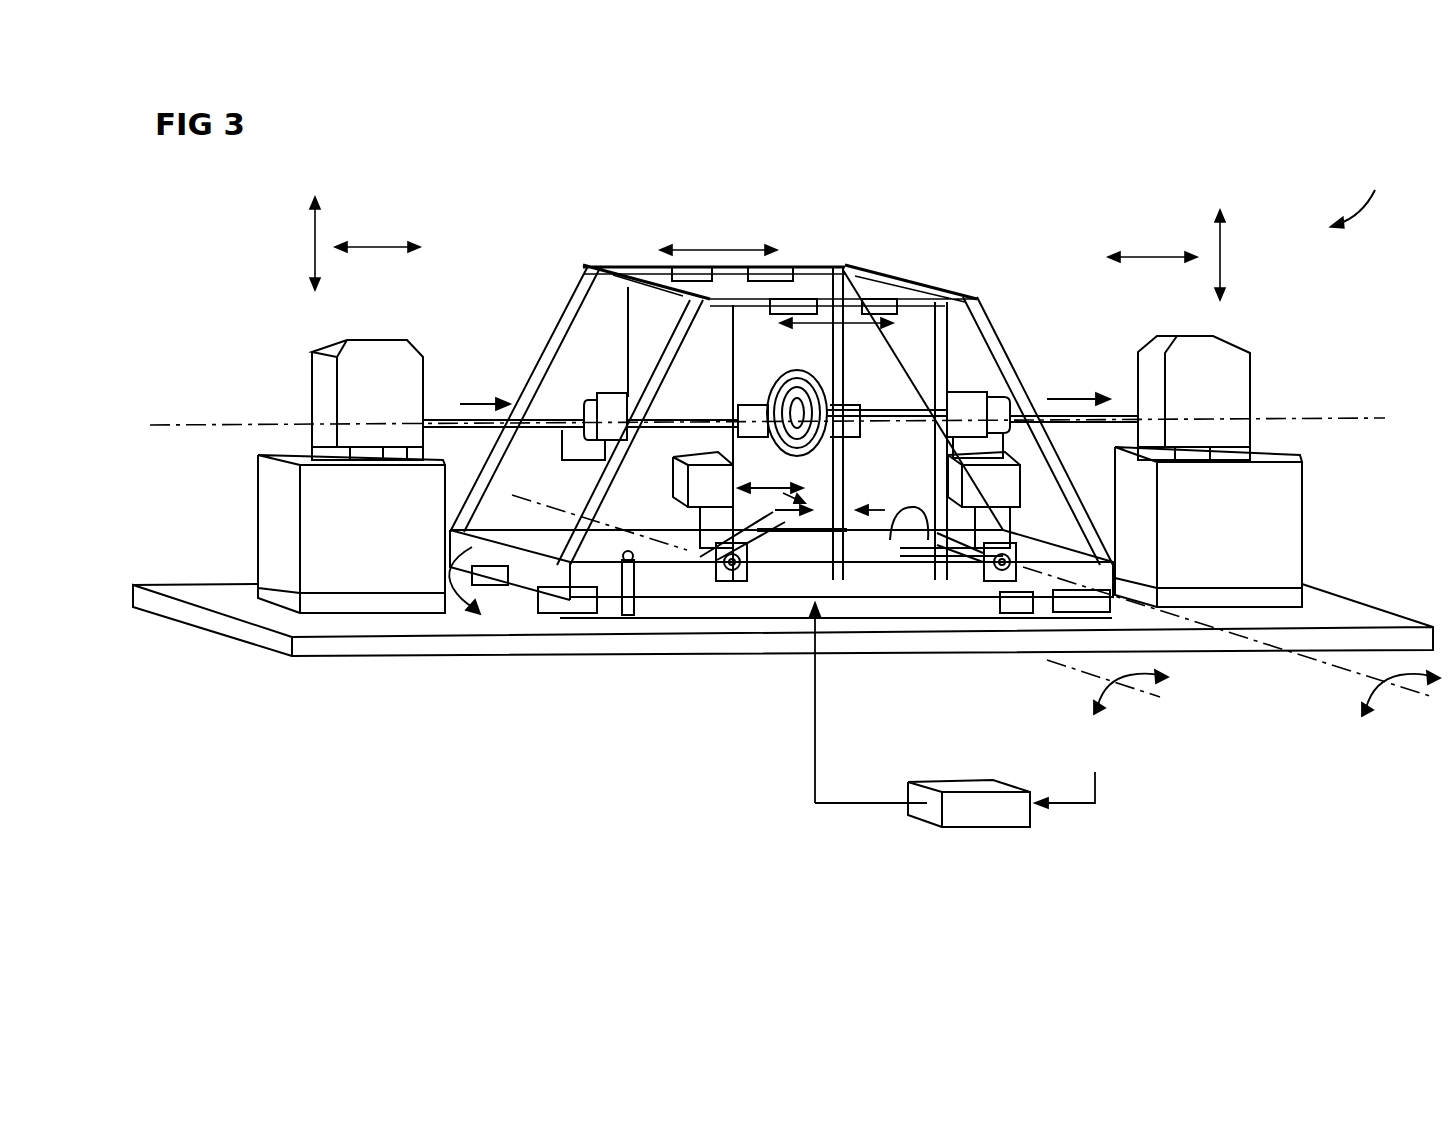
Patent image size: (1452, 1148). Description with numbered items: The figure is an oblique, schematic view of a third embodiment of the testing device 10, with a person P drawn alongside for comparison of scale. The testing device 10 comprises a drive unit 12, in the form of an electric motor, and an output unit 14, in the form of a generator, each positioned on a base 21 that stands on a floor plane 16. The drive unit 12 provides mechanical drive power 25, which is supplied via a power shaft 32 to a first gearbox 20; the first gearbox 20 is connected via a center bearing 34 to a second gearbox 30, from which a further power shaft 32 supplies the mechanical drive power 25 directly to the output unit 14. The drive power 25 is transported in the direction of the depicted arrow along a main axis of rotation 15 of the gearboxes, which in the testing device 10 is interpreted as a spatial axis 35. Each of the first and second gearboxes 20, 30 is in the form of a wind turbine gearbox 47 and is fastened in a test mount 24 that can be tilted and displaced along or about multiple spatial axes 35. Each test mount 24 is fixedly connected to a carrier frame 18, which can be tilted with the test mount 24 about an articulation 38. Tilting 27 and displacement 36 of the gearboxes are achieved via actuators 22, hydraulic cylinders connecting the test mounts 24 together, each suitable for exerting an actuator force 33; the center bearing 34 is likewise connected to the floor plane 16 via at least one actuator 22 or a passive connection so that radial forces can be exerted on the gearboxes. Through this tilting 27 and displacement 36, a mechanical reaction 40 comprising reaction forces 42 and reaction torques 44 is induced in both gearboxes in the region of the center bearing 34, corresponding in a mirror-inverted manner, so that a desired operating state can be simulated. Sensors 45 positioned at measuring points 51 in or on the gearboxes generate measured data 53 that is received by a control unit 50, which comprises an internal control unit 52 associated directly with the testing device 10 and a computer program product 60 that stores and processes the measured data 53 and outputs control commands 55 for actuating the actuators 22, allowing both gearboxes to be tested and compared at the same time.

The testing device 10 is at (1364, 195).
The drive unit 12 is at (320, 393).
The output unit 14 is at (1243, 395).
The main axis of rotation 15 is at (1382, 417).
The floor plane 16 is at (1368, 617).
The carrier frame 18 is at (580, 597).
The first gearbox 20 is at (627, 400).
The base 21 is at (267, 498).
The actuator 22 is at (651, 264).
The test mount 24 is at (908, 275).
The mechanical drive power 25 is at (483, 400).
The tilting 27 is at (456, 613).
The second gearbox 30 is at (968, 398).
The power shaft 32 is at (450, 410).
The actuator force 33 is at (726, 248).
The center bearing 34 is at (795, 300).
The spatial axis 35 is at (791, 536).
The displacement 36 is at (380, 244).
The articulation 38 is at (720, 592).
The mechanical reaction 40 is at (865, 618).
The reaction forces 42 is at (785, 600).
The reaction torques 44 is at (910, 600).
The sensors 45 is at (770, 335).
The wind turbine gearbox 47 is at (770, 335).
The control unit 50 is at (974, 842).
The measuring points 51 is at (770, 335).
The internal control unit 52 is at (974, 842).
The measured data 53 is at (1097, 772).
The control commands 55 is at (808, 772).
The computer program product 60 is at (987, 815).
The person P is at (623, 613).